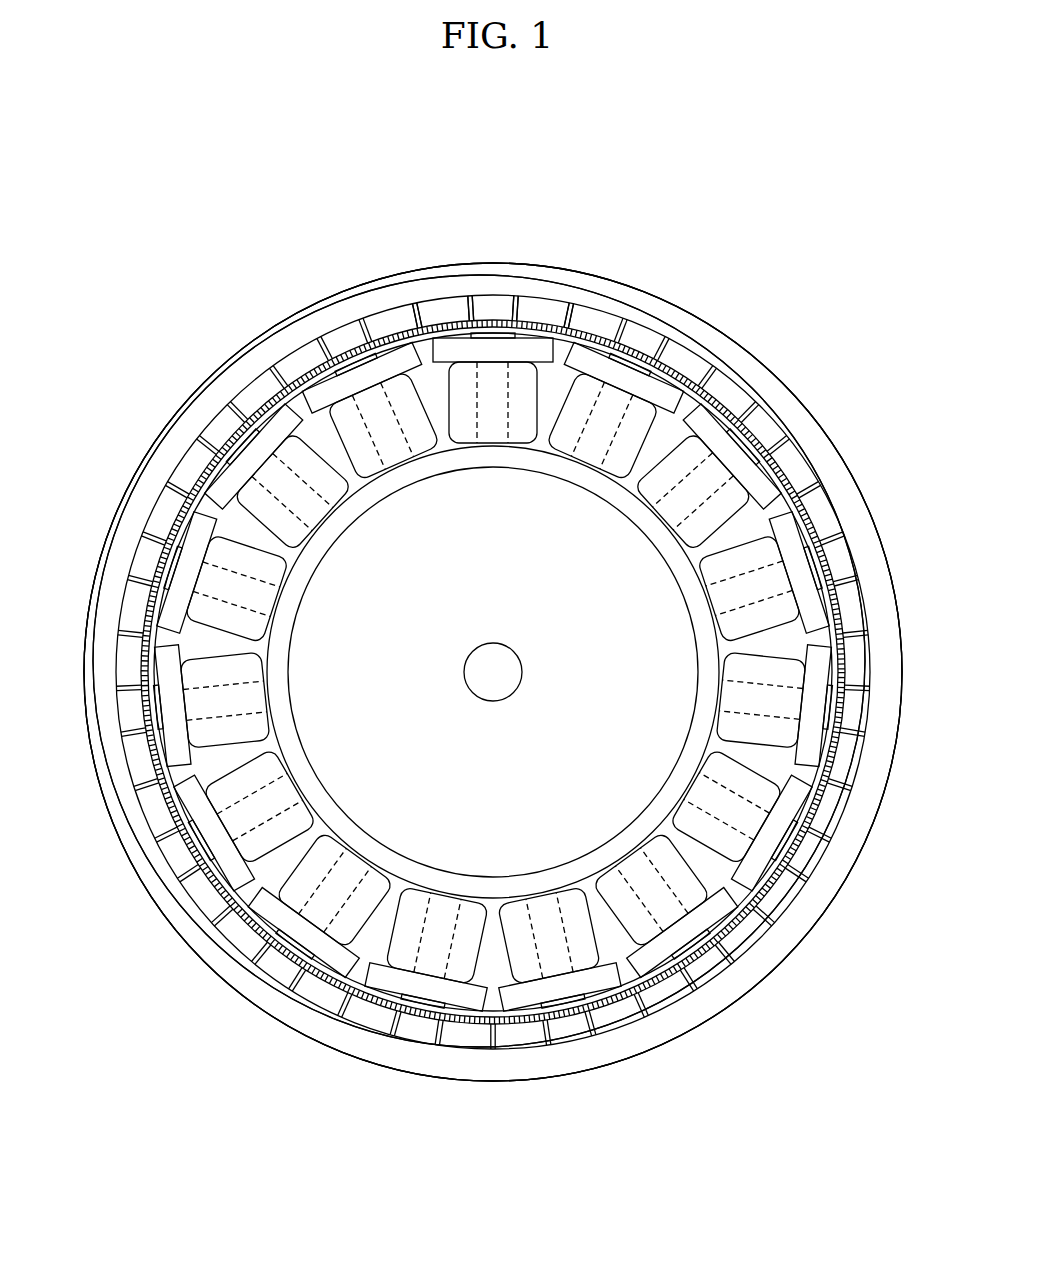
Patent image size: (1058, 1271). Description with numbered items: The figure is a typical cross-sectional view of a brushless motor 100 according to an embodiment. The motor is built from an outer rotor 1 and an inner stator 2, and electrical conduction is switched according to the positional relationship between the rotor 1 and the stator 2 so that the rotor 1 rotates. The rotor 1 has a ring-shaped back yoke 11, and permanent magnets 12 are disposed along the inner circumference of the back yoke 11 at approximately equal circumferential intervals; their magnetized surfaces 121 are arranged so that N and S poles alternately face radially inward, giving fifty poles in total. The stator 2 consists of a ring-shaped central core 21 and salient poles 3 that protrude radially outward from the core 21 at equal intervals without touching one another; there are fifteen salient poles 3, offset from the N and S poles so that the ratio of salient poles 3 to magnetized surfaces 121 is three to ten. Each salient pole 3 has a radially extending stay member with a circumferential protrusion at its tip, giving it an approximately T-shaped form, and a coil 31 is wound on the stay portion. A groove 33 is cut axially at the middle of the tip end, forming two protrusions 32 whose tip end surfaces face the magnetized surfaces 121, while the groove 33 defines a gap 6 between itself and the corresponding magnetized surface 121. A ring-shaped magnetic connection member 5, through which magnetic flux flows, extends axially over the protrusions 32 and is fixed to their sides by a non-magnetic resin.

The brushless motor 100 is at (517, 172).
The rotor 1 is at (360, 262).
The back yoke 11 is at (736, 332).
The permanent magnets 12 is at (620, 312).
The magnetized surfaces 121 is at (583, 322).
The gap 6 is at (483, 318).
The protrusions 32 is at (440, 300).
The groove 33 is at (495, 337).
The salient poles 3 is at (425, 565).
The coil 31 is at (464, 446).
The stator 2 is at (493, 672).
The central core 21 is at (615, 508).
The magnetic connection member 5 is at (853, 534).